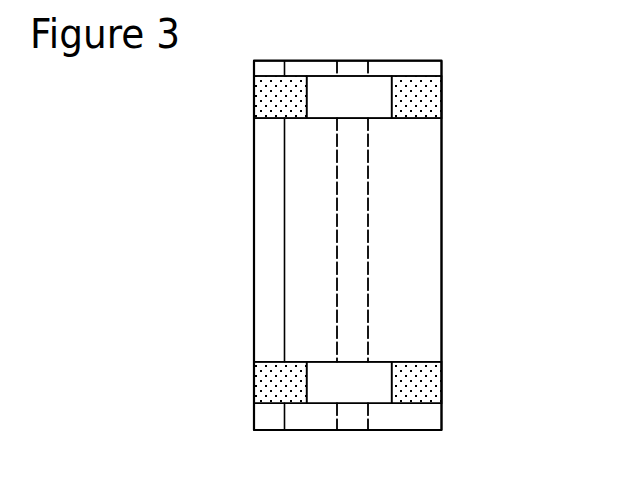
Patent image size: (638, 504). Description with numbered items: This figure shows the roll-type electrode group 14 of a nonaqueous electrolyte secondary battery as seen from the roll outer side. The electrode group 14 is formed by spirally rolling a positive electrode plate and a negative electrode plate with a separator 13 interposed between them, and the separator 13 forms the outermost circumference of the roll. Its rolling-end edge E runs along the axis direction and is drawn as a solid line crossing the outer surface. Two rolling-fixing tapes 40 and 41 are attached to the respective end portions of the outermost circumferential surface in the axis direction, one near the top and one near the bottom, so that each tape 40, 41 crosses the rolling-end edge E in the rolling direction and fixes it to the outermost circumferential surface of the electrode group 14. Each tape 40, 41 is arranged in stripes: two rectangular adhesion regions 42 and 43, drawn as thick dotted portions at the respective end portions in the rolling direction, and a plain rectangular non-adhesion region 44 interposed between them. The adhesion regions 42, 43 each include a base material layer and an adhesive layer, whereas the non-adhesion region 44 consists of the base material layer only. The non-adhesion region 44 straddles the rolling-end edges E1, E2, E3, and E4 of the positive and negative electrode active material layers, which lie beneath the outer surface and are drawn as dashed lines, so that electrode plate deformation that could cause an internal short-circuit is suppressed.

The separator 13 is at (399, 230).
The electrode group 14 is at (470, 182).
The tape 40 is at (422, 108).
The tape 41 is at (423, 383).
The adhesion region 42 is at (268, 90).
The adhesion region 43 is at (417, 88).
The non-adhesion region 44 is at (352, 88).
The rolling-end edge E is at (285, 210).
The rolling-end edge E1 is at (368, 258).
The rolling-end edge E2 is at (455, 245).
The rolling-end edge E3 is at (337, 268).
The rolling-end edge E4 is at (263, 245).